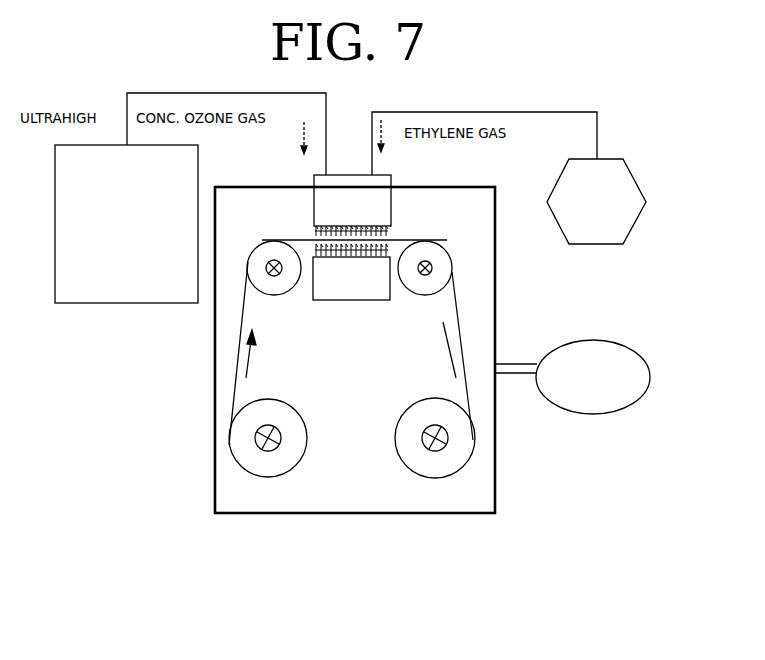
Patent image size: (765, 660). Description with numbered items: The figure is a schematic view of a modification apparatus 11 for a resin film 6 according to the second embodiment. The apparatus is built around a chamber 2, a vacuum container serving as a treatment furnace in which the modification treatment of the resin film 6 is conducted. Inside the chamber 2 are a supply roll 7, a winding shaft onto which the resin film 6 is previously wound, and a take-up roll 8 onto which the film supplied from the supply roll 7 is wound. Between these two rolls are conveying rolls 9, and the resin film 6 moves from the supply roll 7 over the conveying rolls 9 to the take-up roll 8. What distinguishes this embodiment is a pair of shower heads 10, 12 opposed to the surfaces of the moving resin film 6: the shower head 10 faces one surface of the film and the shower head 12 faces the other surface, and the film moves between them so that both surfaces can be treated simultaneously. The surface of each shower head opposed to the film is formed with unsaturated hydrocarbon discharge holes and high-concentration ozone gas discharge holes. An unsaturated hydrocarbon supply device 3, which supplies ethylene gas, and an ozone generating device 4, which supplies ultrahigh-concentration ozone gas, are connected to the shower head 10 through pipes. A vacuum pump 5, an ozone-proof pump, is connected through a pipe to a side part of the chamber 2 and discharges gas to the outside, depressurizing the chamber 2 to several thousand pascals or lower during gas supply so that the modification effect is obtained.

The chamber 2 is at (497, 447).
The unsaturated hydrocarbon supply device 3 is at (633, 225).
The ozone generating device 4 is at (127, 304).
The vacuum pump 5 is at (620, 408).
The resin film 6 is at (273, 238).
The supply roll 7 is at (283, 463).
The take-up roll 8 is at (420, 468).
The conveying rolls 9 is at (262, 256).
The shower head 10 is at (391, 210).
The modification apparatus 11 is at (537, 531).
The shower head 12 is at (362, 300).